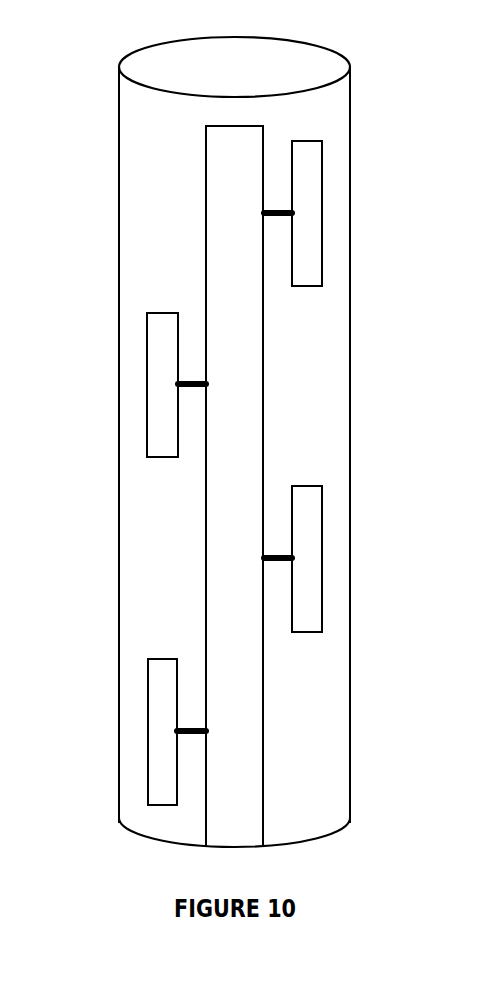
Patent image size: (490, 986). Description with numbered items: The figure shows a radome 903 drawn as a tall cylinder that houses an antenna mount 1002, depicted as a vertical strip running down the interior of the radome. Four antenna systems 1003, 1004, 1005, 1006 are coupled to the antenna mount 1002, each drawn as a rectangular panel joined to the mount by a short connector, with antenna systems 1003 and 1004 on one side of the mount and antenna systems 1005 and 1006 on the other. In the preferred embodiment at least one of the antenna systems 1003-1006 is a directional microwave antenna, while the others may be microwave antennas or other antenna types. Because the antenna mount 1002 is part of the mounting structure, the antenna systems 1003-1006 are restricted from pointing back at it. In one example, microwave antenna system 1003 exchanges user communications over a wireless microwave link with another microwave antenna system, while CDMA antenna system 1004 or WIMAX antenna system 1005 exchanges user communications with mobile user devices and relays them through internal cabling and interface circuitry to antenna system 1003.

The radome 903 is at (330, 52).
The antenna mount 1002 is at (264, 398).
The antenna system 1003 is at (322, 248).
The antenna system 1004 is at (322, 526).
The antenna system 1005 is at (147, 407).
The antenna system 1006 is at (148, 690).